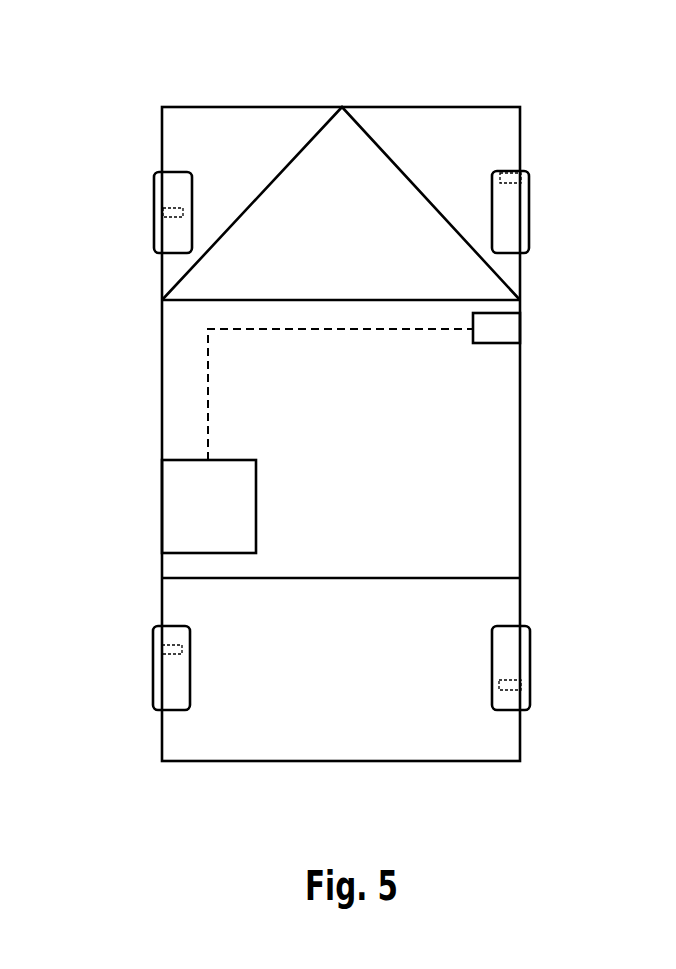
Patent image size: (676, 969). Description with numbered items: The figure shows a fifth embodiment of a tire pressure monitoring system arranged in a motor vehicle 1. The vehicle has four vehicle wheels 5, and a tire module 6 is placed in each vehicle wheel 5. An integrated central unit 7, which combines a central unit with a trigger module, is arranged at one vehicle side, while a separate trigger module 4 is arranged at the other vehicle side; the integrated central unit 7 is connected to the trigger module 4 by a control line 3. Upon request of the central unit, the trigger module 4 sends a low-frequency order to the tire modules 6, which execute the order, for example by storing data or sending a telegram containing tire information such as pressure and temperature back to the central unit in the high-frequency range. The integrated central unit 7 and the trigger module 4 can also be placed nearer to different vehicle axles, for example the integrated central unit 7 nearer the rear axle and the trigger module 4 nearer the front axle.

The motor vehicle 1 is at (560, 130).
The control line 3 is at (209, 403).
The trigger module 4 is at (507, 330).
The vehicle wheel 5 is at (165, 238).
The tire module 6 is at (175, 209).
The integrated central unit 7 is at (175, 508).